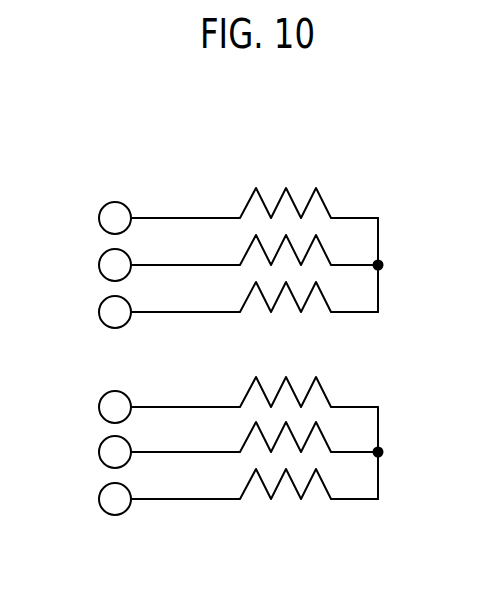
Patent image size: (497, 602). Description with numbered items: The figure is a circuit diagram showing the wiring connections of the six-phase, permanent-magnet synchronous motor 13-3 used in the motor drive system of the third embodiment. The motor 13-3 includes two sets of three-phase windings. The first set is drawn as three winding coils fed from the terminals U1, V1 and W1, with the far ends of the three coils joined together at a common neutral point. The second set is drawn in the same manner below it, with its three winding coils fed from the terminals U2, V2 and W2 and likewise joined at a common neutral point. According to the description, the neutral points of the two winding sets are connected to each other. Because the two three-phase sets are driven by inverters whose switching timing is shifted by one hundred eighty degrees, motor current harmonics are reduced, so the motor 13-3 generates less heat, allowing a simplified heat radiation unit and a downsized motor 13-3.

The six-phase permanent-magnet synchronous motor 13-3 is at (243, 160).
The first U-phase terminal U1 is at (214, 209).
The first V-phase terminal V1 is at (215, 258).
The first W-phase terminal W1 is at (214, 308).
The second U-phase terminal U2 is at (214, 399).
The second V-phase terminal V2 is at (214, 445).
The second W-phase terminal W2 is at (214, 496).